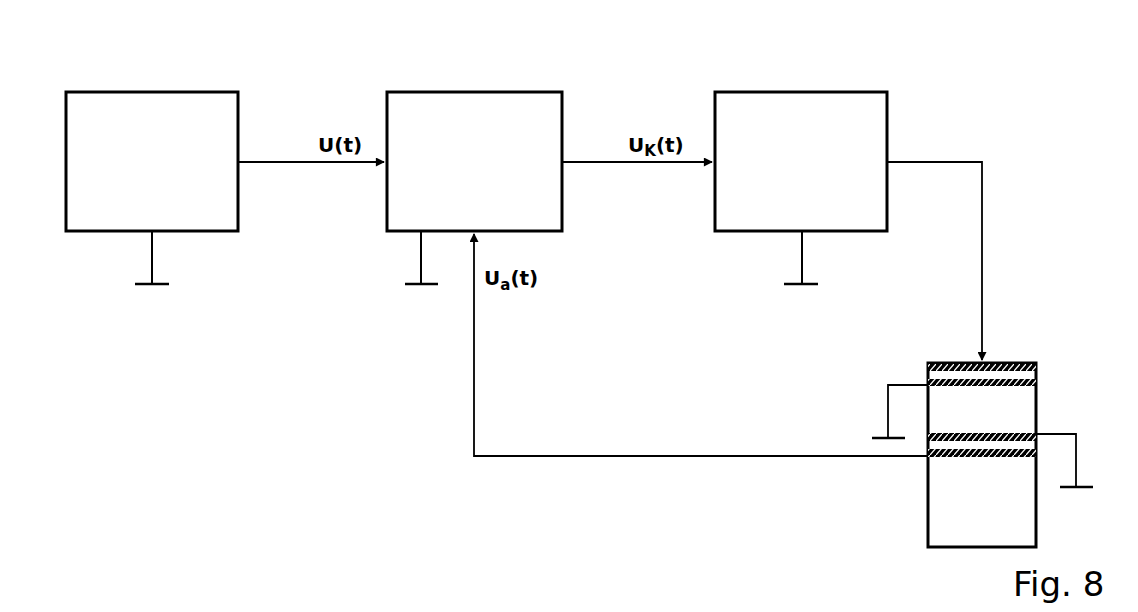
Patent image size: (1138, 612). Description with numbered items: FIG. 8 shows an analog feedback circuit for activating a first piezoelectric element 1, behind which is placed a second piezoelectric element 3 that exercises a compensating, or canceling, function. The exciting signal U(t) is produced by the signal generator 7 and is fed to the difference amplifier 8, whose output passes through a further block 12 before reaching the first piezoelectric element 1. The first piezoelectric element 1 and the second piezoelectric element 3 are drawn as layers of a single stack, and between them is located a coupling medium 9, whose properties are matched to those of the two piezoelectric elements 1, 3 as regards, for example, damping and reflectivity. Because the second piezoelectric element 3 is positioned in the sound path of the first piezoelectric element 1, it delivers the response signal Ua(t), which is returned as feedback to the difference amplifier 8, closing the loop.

The first piezoelectric element 1 is at (979, 417).
The second piezoelectric element 3 is at (919, 464).
The signal generator 7 is at (137, 107).
The difference amplifier 8 is at (477, 107).
The coupling medium 9 is at (1025, 404).
The amplifier 12 is at (820, 107).